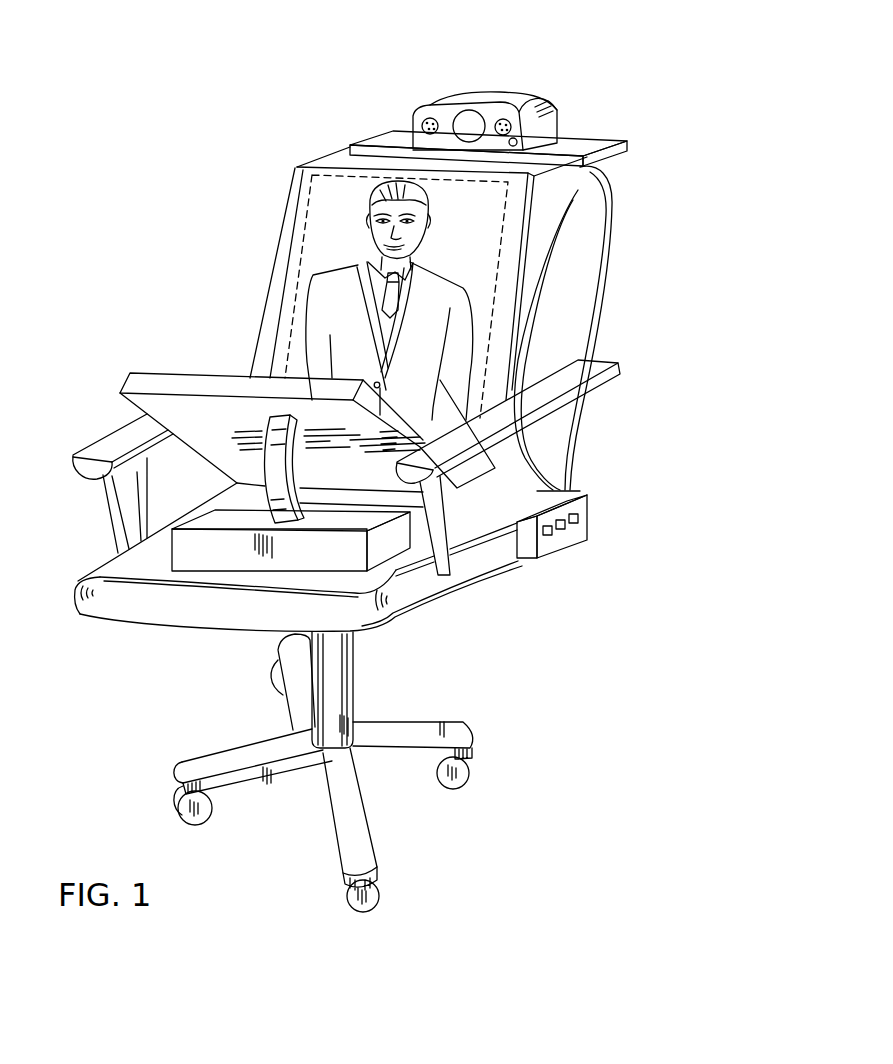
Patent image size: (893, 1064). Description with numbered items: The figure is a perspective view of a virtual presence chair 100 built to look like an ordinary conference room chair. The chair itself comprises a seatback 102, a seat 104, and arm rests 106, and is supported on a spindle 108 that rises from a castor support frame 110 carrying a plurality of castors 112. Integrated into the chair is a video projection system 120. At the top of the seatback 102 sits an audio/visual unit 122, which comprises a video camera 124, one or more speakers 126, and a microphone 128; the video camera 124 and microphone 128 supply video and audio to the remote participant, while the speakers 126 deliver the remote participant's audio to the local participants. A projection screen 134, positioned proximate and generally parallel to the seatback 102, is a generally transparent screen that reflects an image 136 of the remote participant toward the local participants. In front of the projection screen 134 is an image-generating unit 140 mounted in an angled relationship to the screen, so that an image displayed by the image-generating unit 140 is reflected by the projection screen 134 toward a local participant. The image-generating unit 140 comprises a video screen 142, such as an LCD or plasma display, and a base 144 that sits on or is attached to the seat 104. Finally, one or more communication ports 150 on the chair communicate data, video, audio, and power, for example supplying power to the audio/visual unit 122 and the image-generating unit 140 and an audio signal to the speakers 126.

The virtual presence chair 100 is at (650, 122).
The seatback 102 is at (605, 233).
The seat 104 is at (428, 592).
The arm rests 106 is at (598, 365).
The spindle 108 is at (347, 678).
The castor support frame 110 is at (397, 743).
The castors 112 is at (188, 812).
The video projection system 120 is at (308, 113).
The audio/visual (A/V) unit 122 is at (522, 74).
The video camera 124 is at (465, 111).
The speakers 126 is at (425, 121).
The microphone 128 is at (518, 137).
The projection screen 134 is at (280, 250).
The image of a remote participant 136 is at (434, 258).
The image-generating unit 140 is at (157, 358).
The video screen 142 is at (187, 373).
The base 144 is at (215, 517).
The communication ports 150 is at (557, 553).